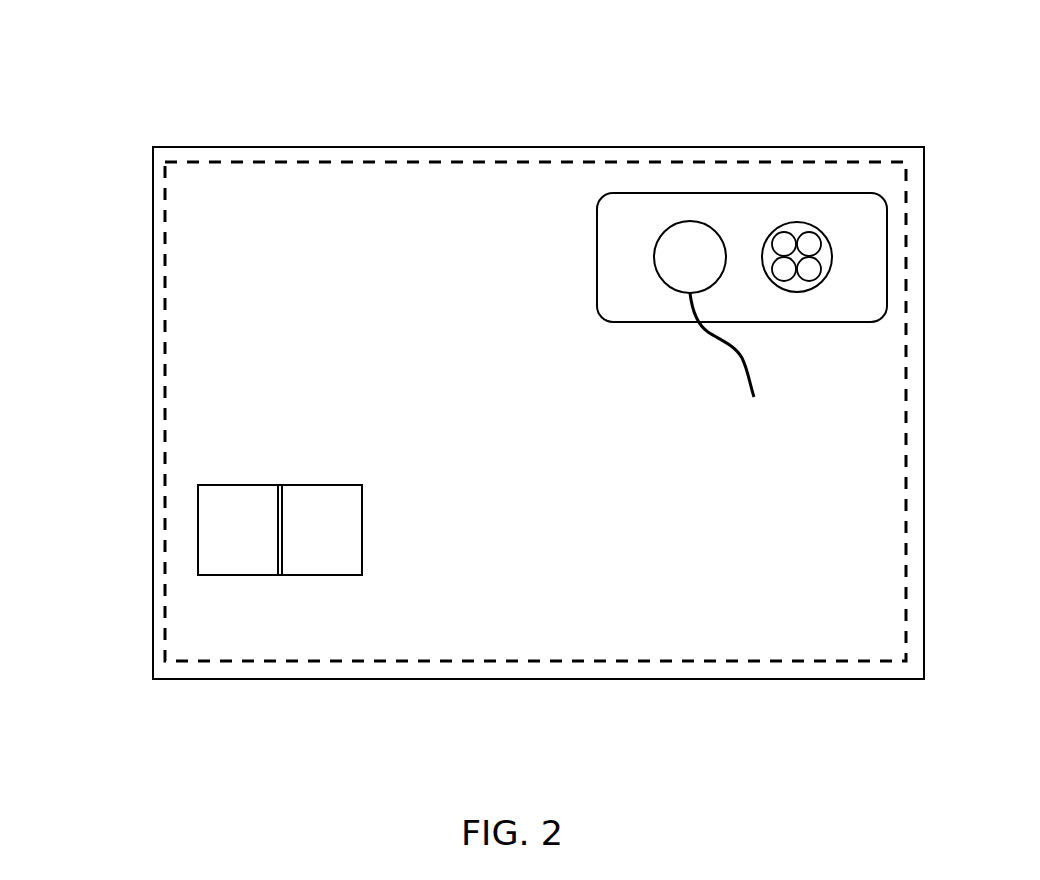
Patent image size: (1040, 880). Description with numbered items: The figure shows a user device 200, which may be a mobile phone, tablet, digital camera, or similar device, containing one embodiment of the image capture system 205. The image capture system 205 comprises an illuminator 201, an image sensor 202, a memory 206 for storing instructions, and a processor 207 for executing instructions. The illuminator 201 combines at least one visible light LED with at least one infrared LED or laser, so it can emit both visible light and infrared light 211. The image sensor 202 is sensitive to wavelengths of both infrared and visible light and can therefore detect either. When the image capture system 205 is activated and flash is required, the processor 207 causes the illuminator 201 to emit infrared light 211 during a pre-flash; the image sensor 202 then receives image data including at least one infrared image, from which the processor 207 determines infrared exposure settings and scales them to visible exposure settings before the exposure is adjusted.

The user device 200 is at (138, 128).
The illuminator 201 is at (690, 221).
The image sensor 202 is at (797, 221).
The image capture system 205 is at (158, 332).
The memory 206 is at (198, 533).
The processor 207 is at (318, 575).
The infrared light 211 is at (752, 372).